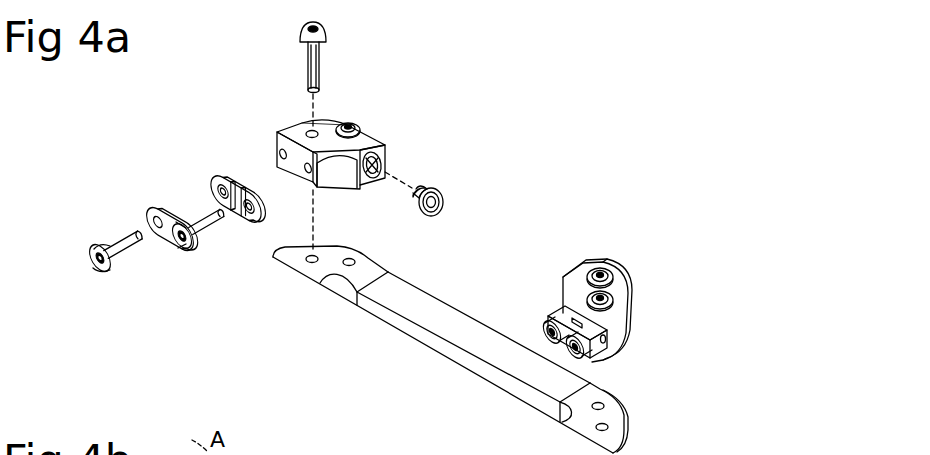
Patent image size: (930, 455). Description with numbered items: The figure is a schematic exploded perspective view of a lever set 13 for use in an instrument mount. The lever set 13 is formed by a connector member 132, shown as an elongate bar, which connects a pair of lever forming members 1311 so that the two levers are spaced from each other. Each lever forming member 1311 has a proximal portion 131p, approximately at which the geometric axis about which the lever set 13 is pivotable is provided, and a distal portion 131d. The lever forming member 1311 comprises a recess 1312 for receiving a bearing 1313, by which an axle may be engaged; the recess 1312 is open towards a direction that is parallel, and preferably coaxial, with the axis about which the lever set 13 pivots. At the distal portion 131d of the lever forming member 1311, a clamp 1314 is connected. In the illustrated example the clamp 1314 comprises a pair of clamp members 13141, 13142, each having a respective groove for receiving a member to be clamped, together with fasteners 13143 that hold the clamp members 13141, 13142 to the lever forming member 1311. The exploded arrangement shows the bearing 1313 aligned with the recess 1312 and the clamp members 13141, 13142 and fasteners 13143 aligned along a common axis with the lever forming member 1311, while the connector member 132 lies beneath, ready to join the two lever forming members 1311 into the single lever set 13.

The lever set 13 is at (633, 213).
The proximal portion 131p is at (374, 141).
The distal portion 131d is at (604, 338).
The lever forming member 1311 is at (618, 323).
The recess 1312 is at (380, 166).
The bearing 1313 is at (443, 194).
The clamp 1314 is at (596, 349).
The clamp member 13141 is at (165, 210).
The clamp member 13142 is at (225, 175).
The fastener 13143 is at (110, 242).
The connector member 132 is at (430, 308).